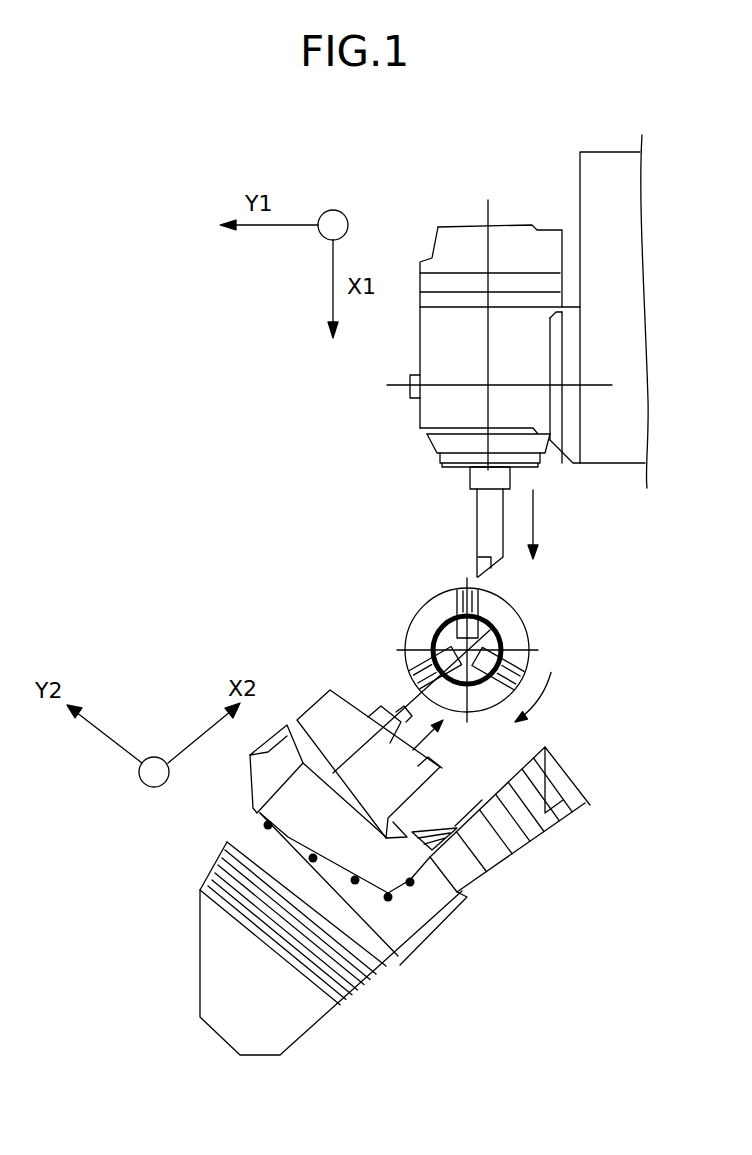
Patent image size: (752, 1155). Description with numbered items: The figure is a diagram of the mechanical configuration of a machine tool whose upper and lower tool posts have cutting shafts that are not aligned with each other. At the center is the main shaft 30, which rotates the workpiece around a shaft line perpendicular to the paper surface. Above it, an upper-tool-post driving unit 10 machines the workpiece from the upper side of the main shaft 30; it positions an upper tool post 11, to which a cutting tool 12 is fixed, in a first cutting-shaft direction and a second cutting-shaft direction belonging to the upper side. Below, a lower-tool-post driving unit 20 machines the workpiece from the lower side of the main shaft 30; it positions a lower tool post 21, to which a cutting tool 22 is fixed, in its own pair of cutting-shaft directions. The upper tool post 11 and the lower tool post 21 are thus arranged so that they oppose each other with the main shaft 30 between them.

The upper-tool-post driving unit 10 is at (521, 226).
The upper tool post 11 is at (470, 474).
The cutting tool 12 is at (477, 527).
The lower-tool-post driving unit 20 is at (427, 940).
The lower tool post 21 is at (366, 714).
The cutting tool 22 is at (383, 710).
The main shaft 30 is at (530, 641).